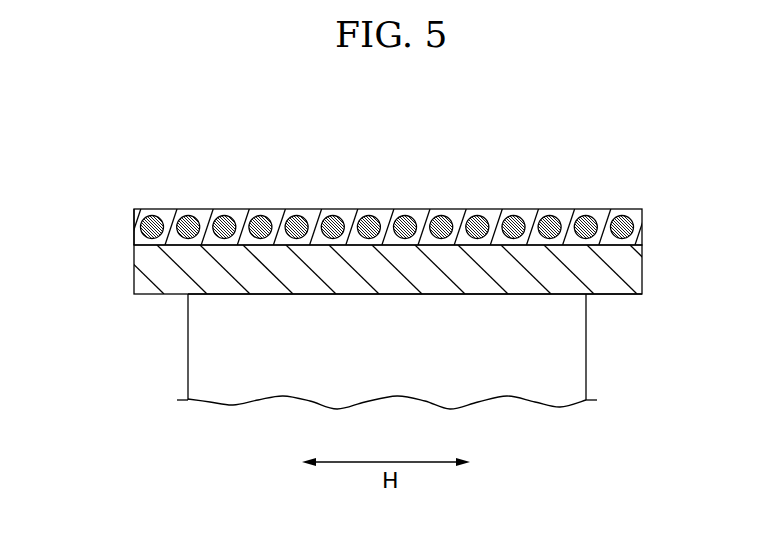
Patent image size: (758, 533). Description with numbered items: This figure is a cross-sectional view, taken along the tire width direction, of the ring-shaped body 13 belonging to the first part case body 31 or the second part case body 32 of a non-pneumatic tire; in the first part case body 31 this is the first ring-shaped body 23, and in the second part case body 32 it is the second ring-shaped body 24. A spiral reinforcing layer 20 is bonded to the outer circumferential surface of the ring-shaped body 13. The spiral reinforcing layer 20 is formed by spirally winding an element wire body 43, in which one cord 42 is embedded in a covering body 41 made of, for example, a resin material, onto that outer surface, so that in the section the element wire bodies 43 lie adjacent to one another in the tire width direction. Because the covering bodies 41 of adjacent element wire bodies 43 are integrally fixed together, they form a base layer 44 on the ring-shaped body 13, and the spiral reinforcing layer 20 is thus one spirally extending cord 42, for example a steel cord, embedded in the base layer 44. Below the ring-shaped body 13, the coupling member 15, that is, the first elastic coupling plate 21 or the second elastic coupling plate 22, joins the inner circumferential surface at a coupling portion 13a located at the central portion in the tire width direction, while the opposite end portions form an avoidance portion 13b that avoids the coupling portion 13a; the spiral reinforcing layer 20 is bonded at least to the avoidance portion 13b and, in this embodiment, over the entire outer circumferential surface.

The first part case body 31 is at (117, 141).
The second part case body 32 is at (366, 210).
The spiral reinforcing layer 20 is at (642, 225).
The element wire body 43 is at (186, 198).
The covering body 41 is at (620, 209).
The cord 42 is at (408, 218).
The base layer 44 is at (132, 227).
The ring-shaped body 13 is at (121, 273).
The first ring-shaped body 23 is at (346, 281).
The second ring-shaped body 24 is at (367, 281).
The coupling portion 13a is at (530, 294).
The avoidance portion 13b is at (605, 294).
The coupling member 15 is at (175, 350).
The first elastic coupling plate 21 is at (332, 351).
The second elastic coupling plate 22 is at (354, 351).